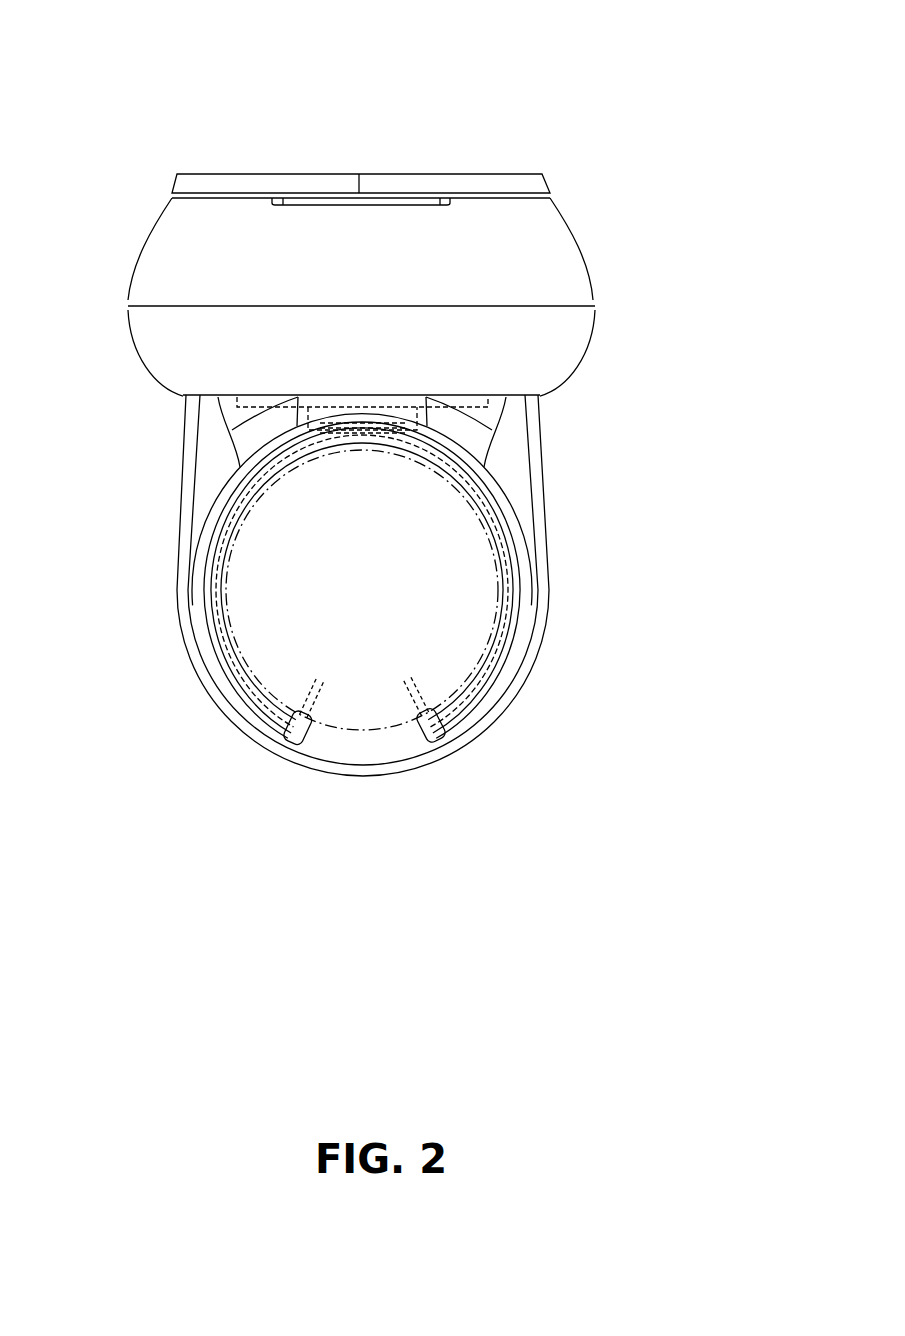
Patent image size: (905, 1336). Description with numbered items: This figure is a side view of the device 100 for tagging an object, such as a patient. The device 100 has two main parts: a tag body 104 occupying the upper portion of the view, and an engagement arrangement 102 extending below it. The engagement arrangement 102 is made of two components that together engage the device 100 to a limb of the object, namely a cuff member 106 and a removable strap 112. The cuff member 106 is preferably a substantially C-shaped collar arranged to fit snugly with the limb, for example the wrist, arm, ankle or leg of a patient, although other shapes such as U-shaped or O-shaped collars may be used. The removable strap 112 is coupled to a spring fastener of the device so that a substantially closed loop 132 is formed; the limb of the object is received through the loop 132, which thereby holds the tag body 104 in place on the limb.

The device 100 is at (148, 110).
The engagement arrangement 102 is at (637, 403).
The tag body 104 is at (637, 172).
The cuff member 106 is at (475, 698).
The removable strap 112 is at (335, 767).
The loop 132 is at (228, 603).